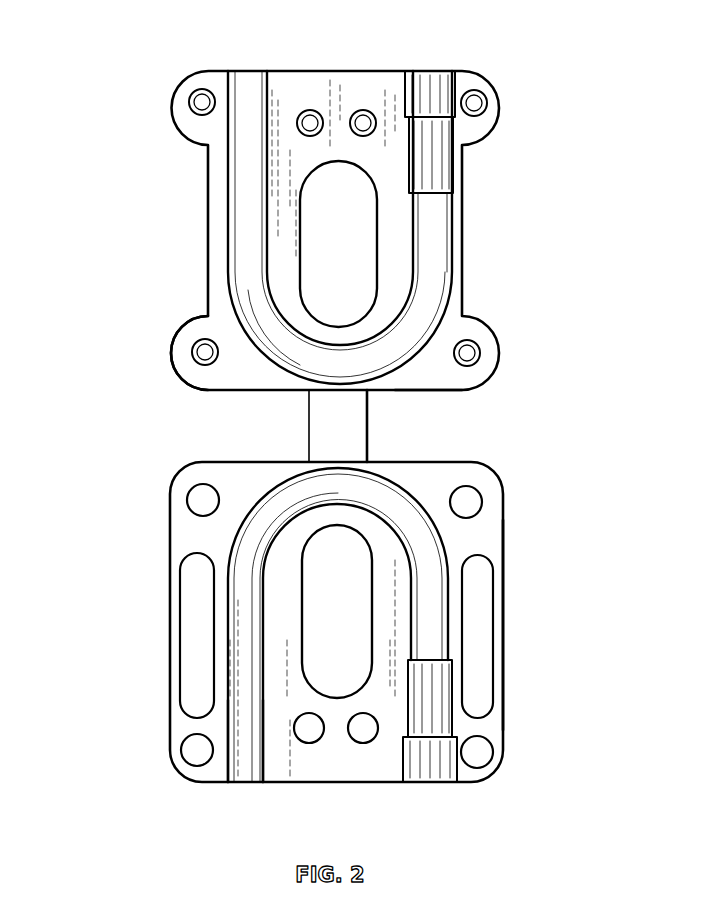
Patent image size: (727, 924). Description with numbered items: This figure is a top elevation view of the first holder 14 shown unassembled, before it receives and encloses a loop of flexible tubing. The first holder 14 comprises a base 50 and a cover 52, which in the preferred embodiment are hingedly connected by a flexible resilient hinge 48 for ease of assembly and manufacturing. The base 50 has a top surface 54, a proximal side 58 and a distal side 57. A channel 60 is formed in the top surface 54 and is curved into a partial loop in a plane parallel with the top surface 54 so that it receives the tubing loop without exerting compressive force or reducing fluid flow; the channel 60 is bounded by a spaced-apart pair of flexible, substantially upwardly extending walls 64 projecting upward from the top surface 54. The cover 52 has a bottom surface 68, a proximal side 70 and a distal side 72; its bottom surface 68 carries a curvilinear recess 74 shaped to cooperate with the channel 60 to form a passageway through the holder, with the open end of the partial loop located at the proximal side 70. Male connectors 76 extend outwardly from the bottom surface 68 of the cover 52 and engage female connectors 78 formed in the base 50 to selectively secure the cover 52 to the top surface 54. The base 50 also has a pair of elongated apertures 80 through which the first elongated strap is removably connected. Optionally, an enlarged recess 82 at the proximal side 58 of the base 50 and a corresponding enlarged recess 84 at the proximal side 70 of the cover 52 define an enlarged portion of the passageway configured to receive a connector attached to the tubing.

The first holder 14 is at (133, 424).
The flexible resilient hinge 48 is at (327, 420).
The base 50 is at (185, 545).
The cover 52 is at (197, 124).
The top surface 54 is at (495, 540).
The distal side 57 is at (240, 462).
The proximal side 58 is at (358, 785).
The channel 60 is at (235, 676).
The substantially upwardly extending walls 64 is at (226, 782).
The bottom surface 68 is at (203, 320).
The proximal side 70 is at (345, 70).
The distal side 72 is at (418, 392).
The recess 74 is at (248, 78).
The male connectors 76 is at (488, 105).
The female connectors 78 is at (310, 725).
The elongated apertures 80 is at (195, 612).
The enlarged recess 82 is at (430, 782).
The enlarged recess 84 is at (432, 80).